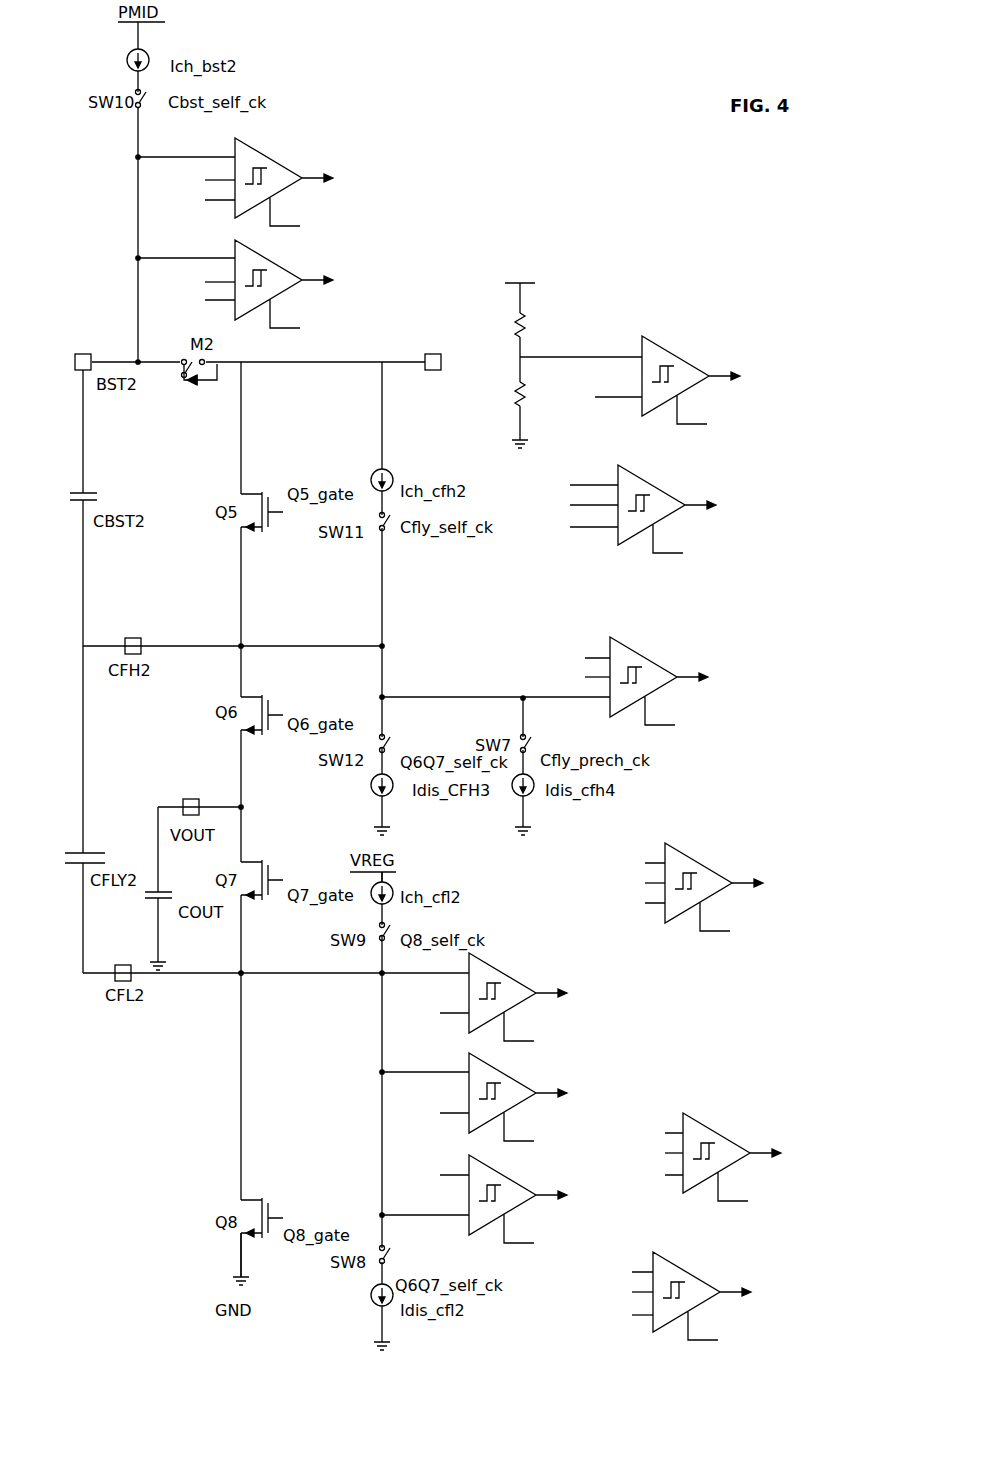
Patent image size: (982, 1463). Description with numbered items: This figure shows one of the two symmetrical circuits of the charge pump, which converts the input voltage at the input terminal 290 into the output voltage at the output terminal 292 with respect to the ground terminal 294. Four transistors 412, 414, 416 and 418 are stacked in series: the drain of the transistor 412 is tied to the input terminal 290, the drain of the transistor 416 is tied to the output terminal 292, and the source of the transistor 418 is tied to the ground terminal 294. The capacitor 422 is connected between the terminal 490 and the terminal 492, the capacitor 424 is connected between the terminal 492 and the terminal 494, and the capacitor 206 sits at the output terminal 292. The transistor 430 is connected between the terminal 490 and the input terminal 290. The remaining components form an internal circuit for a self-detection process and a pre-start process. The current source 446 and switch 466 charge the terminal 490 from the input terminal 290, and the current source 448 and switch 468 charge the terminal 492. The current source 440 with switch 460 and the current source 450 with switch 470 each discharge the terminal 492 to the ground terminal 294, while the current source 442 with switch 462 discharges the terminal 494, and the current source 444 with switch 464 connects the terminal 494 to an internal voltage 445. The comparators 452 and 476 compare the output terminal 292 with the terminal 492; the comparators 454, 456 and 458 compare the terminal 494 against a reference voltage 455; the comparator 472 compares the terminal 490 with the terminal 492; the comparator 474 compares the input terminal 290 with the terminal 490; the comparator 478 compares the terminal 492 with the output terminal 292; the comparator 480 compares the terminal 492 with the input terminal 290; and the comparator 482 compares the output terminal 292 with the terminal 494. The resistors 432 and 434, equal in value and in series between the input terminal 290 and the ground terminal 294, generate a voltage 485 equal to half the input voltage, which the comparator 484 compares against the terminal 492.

The capacitor 206 is at (148, 900).
The input terminal 290 is at (138, 30).
The output terminal 292 is at (191, 799).
The ground terminal 294 is at (380, 827).
The transistor 412 is at (259, 492).
The transistor 414 is at (260, 696).
The transistor 416 is at (257, 864).
The transistor 418 is at (257, 1200).
The capacitor 422 is at (88, 492).
The capacitor 424 is at (88, 852).
The transistor 430 is at (184, 360).
The resistor 432 is at (526, 320).
The resistor 434 is at (522, 385).
The current source 440 is at (530, 794).
The current source 442 is at (371, 1297).
The current source 444 is at (392, 900).
The internal voltage 445 is at (384, 874).
The current source 446 is at (127, 62).
The current source 448 is at (392, 476).
The current source 450 is at (392, 792).
The comparator 452 is at (634, 653).
The comparator 454 is at (495, 1161).
The reference voltage 455 is at (450, 1015).
The comparator 456 is at (518, 1065).
The comparator 458 is at (482, 968).
The switch 460 is at (527, 742).
The switch 462 is at (386, 1260).
The switch 464 is at (386, 936).
The switch 466 is at (143, 105).
The switch 468 is at (386, 526).
The switch 470 is at (386, 740).
The comparator 472 is at (290, 285).
The comparator 474 is at (272, 154).
The comparator 476 is at (670, 516).
The comparator 478 is at (686, 861).
The comparator 480 is at (704, 1131).
The comparator 482 is at (669, 1271).
The comparator 484 is at (666, 356).
The voltage 485 is at (636, 340).
The terminal 490 is at (88, 348).
The terminal 492 is at (142, 622).
The terminal 494 is at (115, 980).